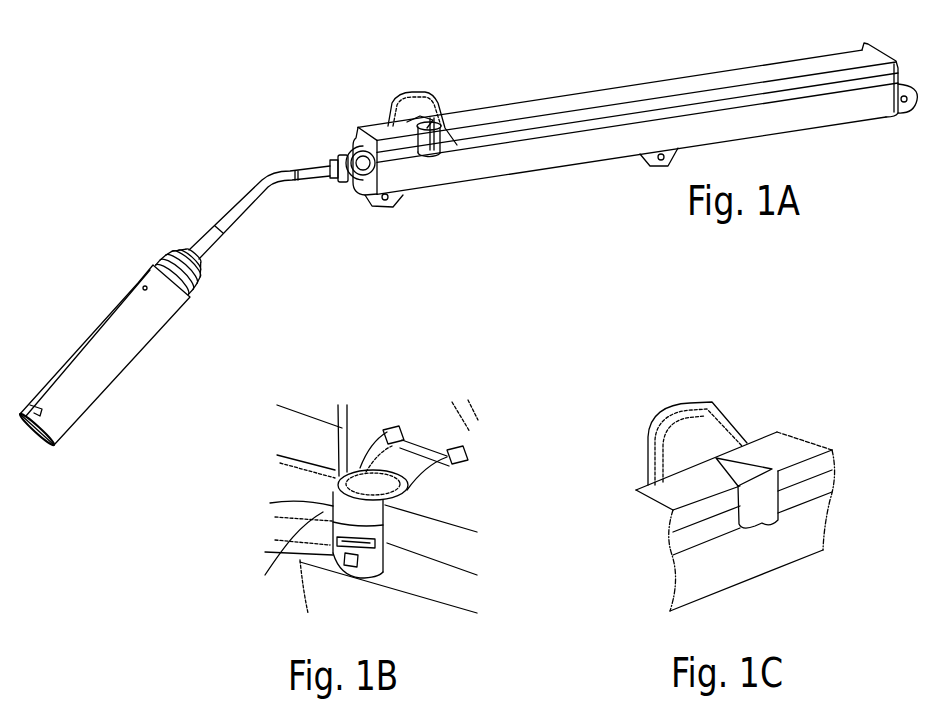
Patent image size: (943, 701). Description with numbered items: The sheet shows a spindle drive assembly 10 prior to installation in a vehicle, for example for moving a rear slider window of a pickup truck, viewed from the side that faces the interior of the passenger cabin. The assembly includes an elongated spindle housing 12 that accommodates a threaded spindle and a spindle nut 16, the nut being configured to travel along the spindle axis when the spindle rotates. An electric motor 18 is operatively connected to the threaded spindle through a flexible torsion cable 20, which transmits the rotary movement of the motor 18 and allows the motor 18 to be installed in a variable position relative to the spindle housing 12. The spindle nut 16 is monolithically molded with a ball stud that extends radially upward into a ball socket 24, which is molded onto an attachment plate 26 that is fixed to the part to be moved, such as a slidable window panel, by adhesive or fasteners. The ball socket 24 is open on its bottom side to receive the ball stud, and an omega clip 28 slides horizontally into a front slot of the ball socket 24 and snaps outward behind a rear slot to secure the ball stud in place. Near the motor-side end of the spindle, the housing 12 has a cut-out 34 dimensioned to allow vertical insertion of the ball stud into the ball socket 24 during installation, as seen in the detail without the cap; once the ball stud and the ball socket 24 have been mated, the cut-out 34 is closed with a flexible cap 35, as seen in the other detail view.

In FIG. 1A, the spindle drive assembly 10 is at (283, 112).
In FIG. 1A, the spindle housing 12 is at (513, 158).
In FIG. 1B, the spindle housing 12 is at (448, 503).
In FIG. 1C, the spindle housing 12 is at (810, 532).
In FIG. 1B, the spindle nut 16 is at (293, 530).
In FIG. 1A, the electric motor 18 is at (153, 314).
In FIG. 1A, the flexible torsion cable 20 is at (268, 184).
In FIG. 1A, the ball socket 24 is at (435, 118).
In FIG. 1B, the ball socket 24 is at (340, 500).
In FIG. 1A, the attachment plate 26 is at (400, 105).
In FIG. 1B, the attachment plate 26 is at (393, 420).
In FIG. 1C, the attachment plate 26 is at (715, 443).
In FIG. 1B, the omega clip 28 is at (337, 538).
In FIG. 1A, the cut-out 34 is at (435, 152).
In FIG. 1B, the cut-out 34 is at (310, 447).
In FIG. 1C, the flexible cap 35 is at (763, 507).